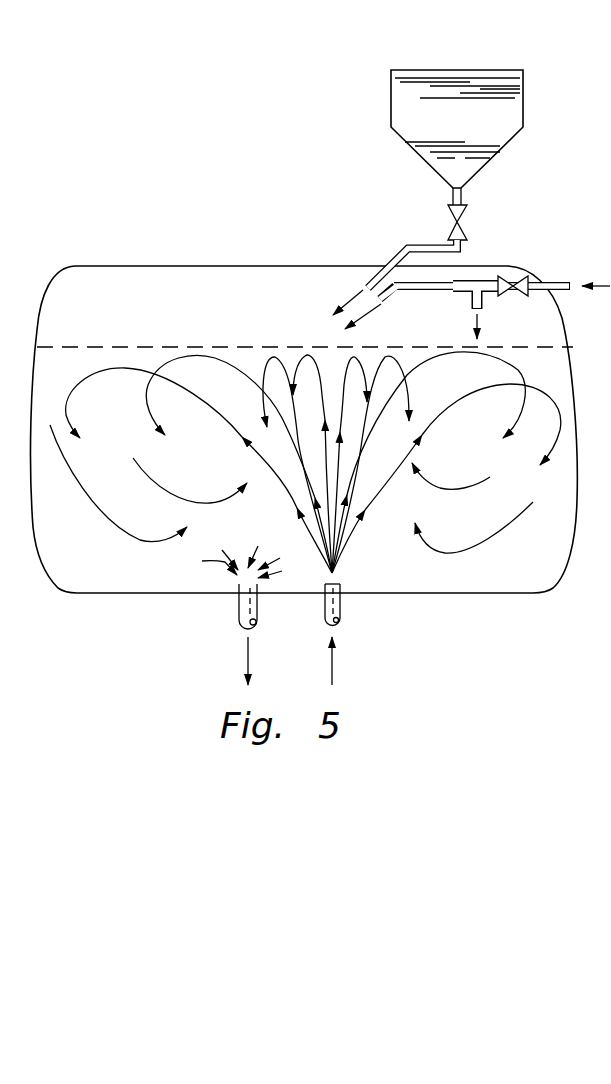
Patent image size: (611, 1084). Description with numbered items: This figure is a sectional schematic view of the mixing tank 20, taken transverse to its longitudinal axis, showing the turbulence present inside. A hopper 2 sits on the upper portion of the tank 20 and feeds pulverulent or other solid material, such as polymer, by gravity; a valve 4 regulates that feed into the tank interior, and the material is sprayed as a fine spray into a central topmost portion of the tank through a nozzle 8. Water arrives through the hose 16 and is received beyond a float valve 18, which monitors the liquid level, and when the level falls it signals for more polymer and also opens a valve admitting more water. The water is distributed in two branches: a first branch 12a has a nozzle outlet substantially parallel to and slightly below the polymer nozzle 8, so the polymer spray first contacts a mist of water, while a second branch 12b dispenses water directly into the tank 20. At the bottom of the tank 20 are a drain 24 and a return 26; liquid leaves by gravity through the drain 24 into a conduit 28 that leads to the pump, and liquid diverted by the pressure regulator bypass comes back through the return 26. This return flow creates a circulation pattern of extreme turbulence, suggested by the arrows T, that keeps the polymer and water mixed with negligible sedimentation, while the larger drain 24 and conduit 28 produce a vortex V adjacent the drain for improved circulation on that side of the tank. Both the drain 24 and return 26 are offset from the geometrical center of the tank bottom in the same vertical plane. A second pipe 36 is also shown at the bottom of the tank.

The hopper 2 is at (437, 119).
The valve 4 is at (463, 212).
The nozzle 8 is at (376, 273).
The first branch 12a is at (380, 299).
The second branch 12b is at (482, 297).
The hose 16 is at (553, 282).
The float valve 18 is at (521, 295).
The tank 20 is at (170, 220).
The drain 24 is at (240, 584).
The return 26 is at (342, 581).
The conduit 28 is at (243, 612).
The inlet pipe 36 is at (342, 608).
The arrows T is at (255, 372).
The vortex V is at (259, 538).